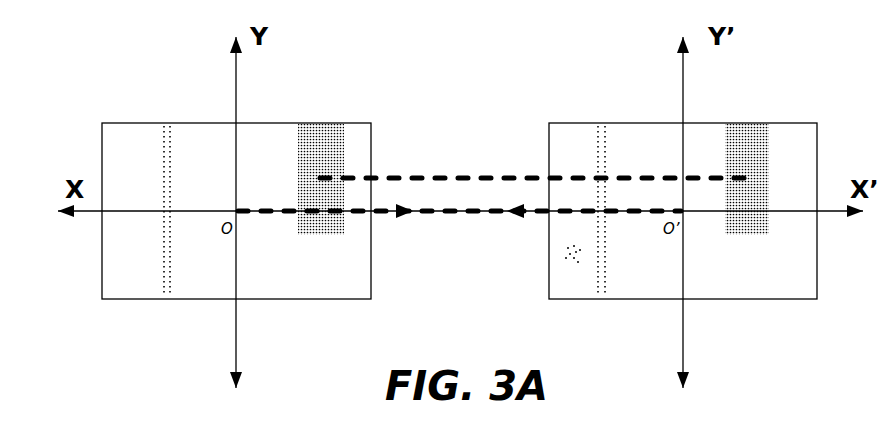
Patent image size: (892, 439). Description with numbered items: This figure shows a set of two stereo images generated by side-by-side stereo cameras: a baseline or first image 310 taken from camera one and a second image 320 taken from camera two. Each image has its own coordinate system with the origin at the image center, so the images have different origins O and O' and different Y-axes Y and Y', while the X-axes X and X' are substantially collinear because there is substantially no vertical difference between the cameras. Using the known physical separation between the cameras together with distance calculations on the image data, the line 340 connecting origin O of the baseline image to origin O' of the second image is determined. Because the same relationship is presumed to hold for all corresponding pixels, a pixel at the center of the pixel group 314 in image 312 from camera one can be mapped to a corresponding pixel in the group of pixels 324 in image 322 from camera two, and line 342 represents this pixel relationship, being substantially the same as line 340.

The first image 310 is at (219, 182).
The image from camera 1 312 is at (100, 123).
The pixel group 314 is at (314, 123).
The second image 320 is at (686, 163).
The image from camera 2 322 is at (572, 123).
The group of pixels 324 is at (758, 123).
The line connecting the origins 340 is at (450, 215).
The line representing pixel relationship 342 is at (505, 186).